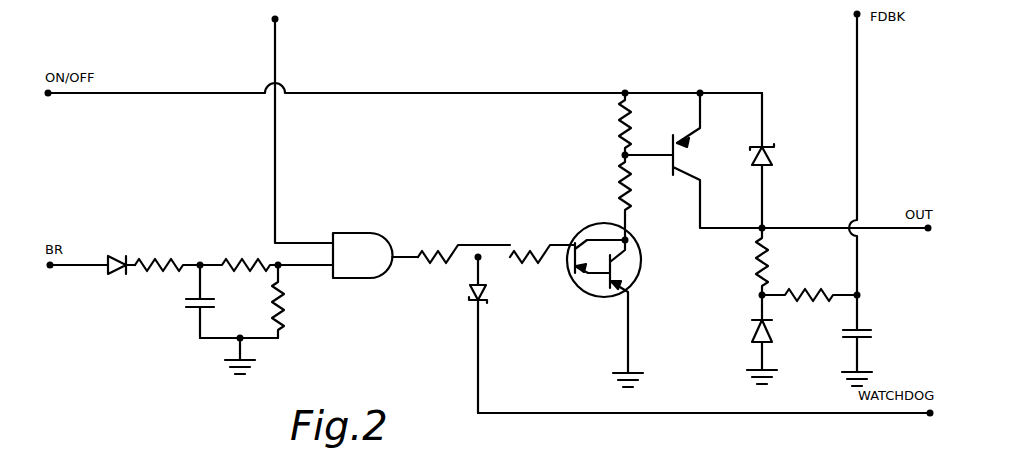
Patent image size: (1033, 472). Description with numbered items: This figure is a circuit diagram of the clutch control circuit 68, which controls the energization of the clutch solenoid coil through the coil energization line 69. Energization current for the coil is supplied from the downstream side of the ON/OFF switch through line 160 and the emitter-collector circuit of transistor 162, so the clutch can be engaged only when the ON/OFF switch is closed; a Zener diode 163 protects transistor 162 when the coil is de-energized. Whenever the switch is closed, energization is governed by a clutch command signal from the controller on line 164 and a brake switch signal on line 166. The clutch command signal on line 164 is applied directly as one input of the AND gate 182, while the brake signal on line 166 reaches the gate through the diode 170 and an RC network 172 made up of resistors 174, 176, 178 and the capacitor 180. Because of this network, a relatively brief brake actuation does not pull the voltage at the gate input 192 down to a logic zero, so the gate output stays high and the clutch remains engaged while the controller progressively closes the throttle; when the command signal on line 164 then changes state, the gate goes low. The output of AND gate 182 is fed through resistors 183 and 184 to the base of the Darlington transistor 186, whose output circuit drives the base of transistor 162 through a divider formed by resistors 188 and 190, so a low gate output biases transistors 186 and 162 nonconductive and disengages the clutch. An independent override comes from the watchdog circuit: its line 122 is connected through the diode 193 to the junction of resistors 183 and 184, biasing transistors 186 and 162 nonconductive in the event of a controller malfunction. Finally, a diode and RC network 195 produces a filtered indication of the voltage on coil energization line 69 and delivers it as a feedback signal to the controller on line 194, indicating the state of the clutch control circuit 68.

The clutch control circuit 68 is at (534, 56).
The line 160 is at (410, 95).
The line 164 is at (278, 62).
The line 166 is at (80, 263).
The diode 170 is at (120, 278).
The resistor 174 is at (157, 262).
The resistor 176 is at (246, 262).
The input 192 is at (300, 268).
The RC network 172 is at (214, 319).
The capacitor 180 is at (190, 300).
The resistor 178 is at (285, 300).
The AND gate 182 is at (378, 233).
The resistor 183 is at (440, 250).
The diode 193 is at (470, 303).
The resistor 184 is at (540, 250).
The Darlington transistor 186 is at (580, 296).
The resistor 188 is at (625, 135).
The resistor 190 is at (625, 190).
The transistor 162 is at (674, 163).
The Zener diode 163 is at (772, 158).
The line 69 is at (886, 232).
The line 194 is at (858, 104).
The diode and RC network 195 is at (868, 293).
The line 122 is at (840, 415).